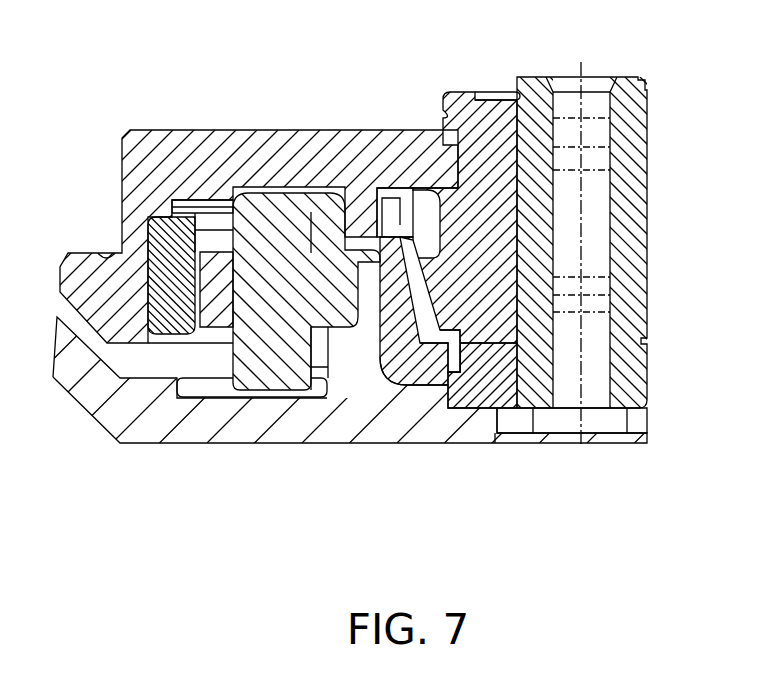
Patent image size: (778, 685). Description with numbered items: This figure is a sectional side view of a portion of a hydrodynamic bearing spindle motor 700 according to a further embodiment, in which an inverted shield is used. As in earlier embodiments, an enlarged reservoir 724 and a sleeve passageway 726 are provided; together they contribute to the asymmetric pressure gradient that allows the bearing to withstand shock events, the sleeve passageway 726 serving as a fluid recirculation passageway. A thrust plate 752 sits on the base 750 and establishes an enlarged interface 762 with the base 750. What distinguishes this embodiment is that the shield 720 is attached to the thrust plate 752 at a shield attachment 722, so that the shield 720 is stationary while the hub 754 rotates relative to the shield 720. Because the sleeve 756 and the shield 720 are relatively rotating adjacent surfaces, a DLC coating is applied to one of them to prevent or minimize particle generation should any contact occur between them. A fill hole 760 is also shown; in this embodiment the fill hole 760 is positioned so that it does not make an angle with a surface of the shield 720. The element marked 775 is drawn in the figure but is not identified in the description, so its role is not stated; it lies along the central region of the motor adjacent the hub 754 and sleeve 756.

The spindle motor 700 is at (359, 75).
The shield 720 is at (414, 292).
The shield attachment 722 is at (484, 254).
The enlarged reservoir 724 is at (420, 328).
The sleeve passageway 726 is at (440, 330).
The base 750 is at (392, 420).
The thrust plate 752 is at (514, 410).
The hub 754 is at (222, 147).
The sleeve 756 is at (478, 96).
The fill hole 760 is at (386, 368).
The enlarged interface 762 is at (467, 410).
The bore 775 is at (592, 193).